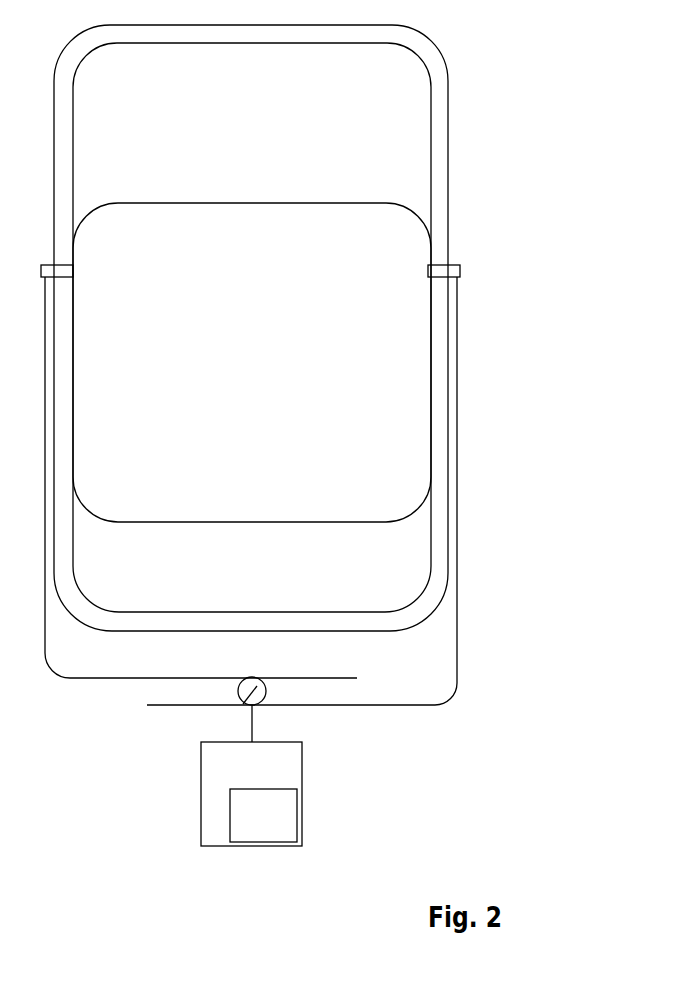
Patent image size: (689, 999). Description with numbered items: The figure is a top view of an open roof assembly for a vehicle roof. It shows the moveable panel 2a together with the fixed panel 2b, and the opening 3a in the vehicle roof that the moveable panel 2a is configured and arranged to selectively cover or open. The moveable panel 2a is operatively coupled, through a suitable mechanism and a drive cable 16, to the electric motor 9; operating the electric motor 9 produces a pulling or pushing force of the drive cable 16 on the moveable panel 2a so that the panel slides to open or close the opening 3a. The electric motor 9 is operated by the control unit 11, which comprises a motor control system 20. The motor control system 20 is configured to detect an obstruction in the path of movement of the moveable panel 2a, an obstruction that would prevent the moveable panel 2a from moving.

The opening 3a is at (237, 131).
The moveable panel 2a is at (229, 386).
The fixed panel 2b is at (229, 581).
The drive cable 16 is at (457, 367).
The electric motor 9 is at (243, 704).
The control unit 11 is at (262, 771).
The motor control system 20 is at (251, 825).